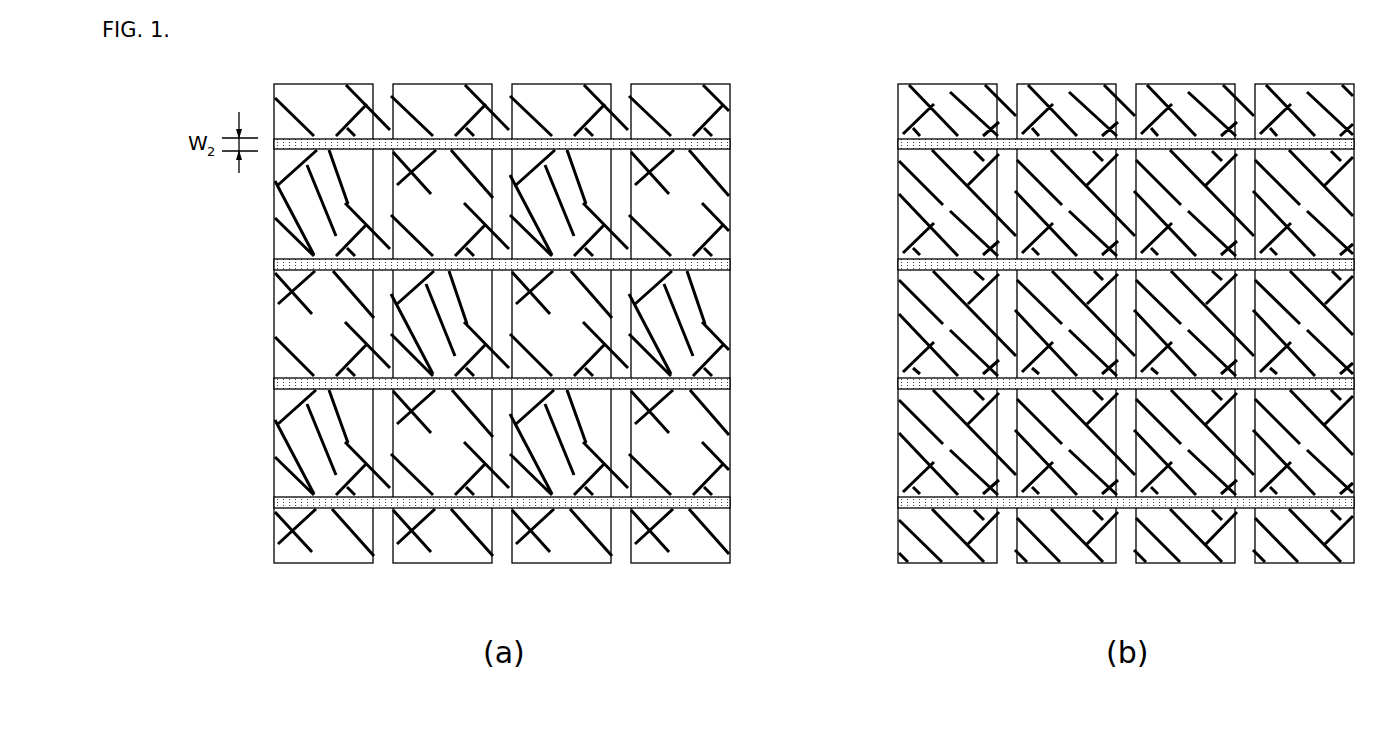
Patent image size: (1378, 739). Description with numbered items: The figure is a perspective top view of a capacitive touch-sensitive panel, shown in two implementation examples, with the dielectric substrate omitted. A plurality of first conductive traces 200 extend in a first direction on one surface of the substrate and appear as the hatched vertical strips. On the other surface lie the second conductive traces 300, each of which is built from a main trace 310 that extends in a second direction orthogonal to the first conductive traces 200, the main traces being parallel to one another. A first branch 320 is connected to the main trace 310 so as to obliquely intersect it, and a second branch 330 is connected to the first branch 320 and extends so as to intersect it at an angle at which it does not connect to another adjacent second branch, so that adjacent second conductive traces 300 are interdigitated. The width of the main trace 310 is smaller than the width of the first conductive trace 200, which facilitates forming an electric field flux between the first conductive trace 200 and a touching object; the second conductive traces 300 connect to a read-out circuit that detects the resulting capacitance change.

The first conductive trace 200 is at (330, 549).
The second conductive trace 300 is at (172, 208).
The main trace 310 is at (276, 264).
The first branch 320 is at (337, 248).
The second branch 330 is at (286, 300).